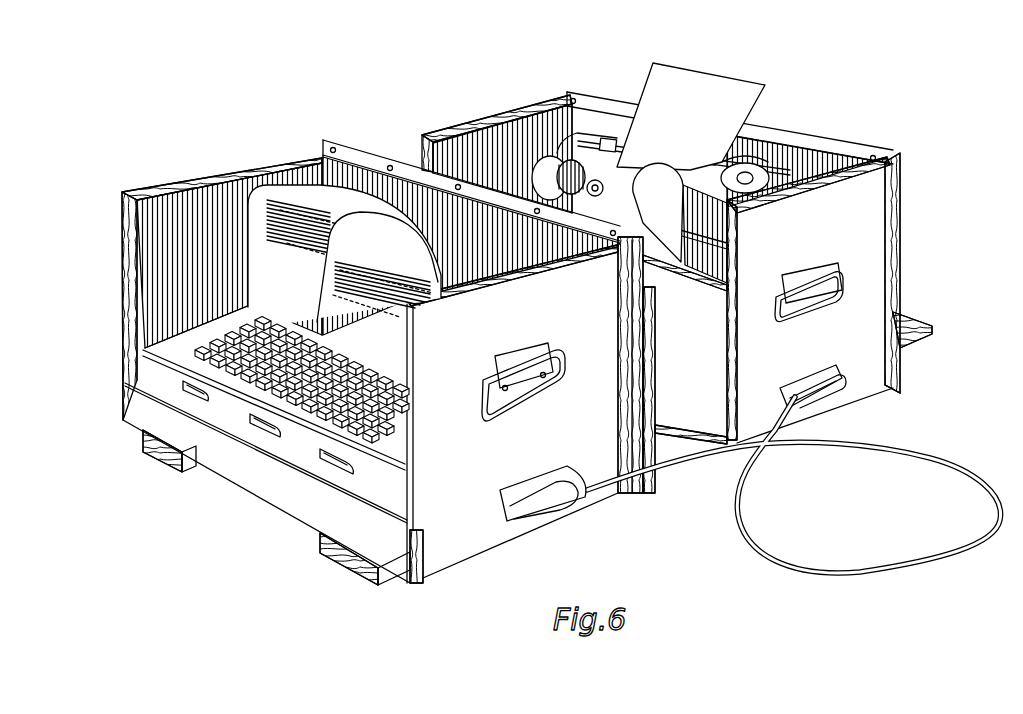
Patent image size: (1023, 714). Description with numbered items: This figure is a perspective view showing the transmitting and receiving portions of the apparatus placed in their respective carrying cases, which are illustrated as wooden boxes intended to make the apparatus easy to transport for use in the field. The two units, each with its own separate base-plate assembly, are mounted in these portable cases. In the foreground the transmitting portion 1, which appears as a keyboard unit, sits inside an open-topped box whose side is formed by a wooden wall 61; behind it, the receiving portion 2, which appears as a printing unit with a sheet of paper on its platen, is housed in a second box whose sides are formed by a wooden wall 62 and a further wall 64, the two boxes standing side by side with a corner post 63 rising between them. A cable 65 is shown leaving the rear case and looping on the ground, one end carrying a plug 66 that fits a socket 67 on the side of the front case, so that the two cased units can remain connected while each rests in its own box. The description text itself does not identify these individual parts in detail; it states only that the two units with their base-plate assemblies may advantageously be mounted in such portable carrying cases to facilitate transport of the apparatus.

The typewriter hood 1 is at (267, 243).
The printing unit with paper sheet 2 is at (650, 193).
The left side wall of keyboard case 61 is at (208, 180).
The side wall of printer case 62 is at (486, 122).
The corner post 63 is at (655, 354).
The right side wall of printer case 64 is at (898, 246).
The connecting cable 65 is at (832, 567).
The cable plug 66 is at (562, 497).
The cable socket 67 is at (840, 387).